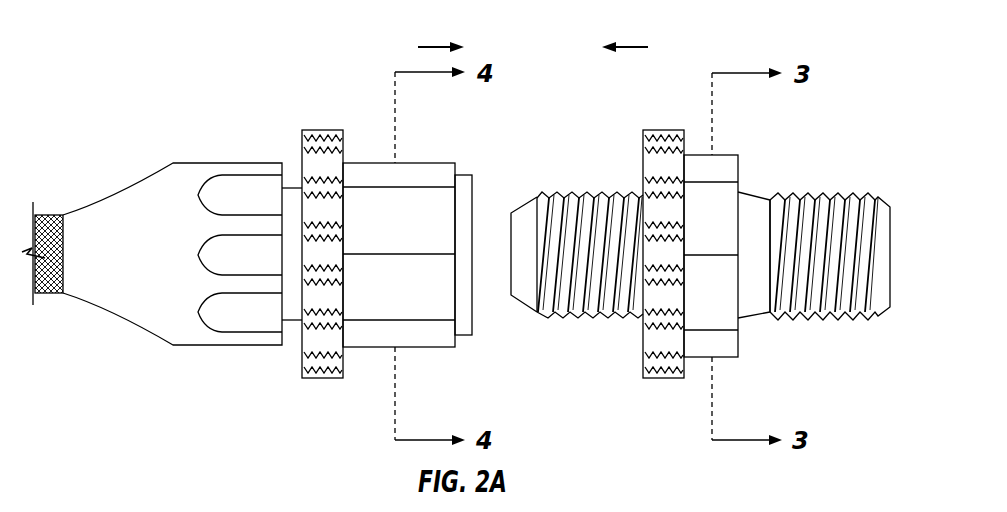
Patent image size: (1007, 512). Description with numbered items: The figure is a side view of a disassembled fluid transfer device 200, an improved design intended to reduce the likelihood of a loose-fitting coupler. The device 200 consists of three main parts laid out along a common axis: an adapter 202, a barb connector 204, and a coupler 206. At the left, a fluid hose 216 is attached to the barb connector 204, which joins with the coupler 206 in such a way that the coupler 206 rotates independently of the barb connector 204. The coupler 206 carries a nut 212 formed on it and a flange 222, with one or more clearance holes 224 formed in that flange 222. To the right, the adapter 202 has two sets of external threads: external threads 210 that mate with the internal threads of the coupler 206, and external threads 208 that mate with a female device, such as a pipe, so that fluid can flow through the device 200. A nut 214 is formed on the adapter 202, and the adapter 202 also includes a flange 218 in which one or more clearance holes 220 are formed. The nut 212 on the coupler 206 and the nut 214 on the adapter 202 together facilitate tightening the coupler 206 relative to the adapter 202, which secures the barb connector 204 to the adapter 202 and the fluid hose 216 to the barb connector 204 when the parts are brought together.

The fluid transfer device 200 is at (231, 42).
The adapter 202 is at (737, 342).
The barb connector 204 is at (142, 322).
The coupler 206 is at (430, 340).
The external threads 208 is at (828, 203).
The external threads 210 is at (610, 312).
The nut 212 is at (442, 172).
The nut 214 is at (717, 187).
The fluid hose 216 is at (40, 212).
The flange 218 is at (672, 377).
The clearance holes 220 is at (645, 145).
The flange 222 is at (310, 372).
The clearance holes 224 is at (305, 143).